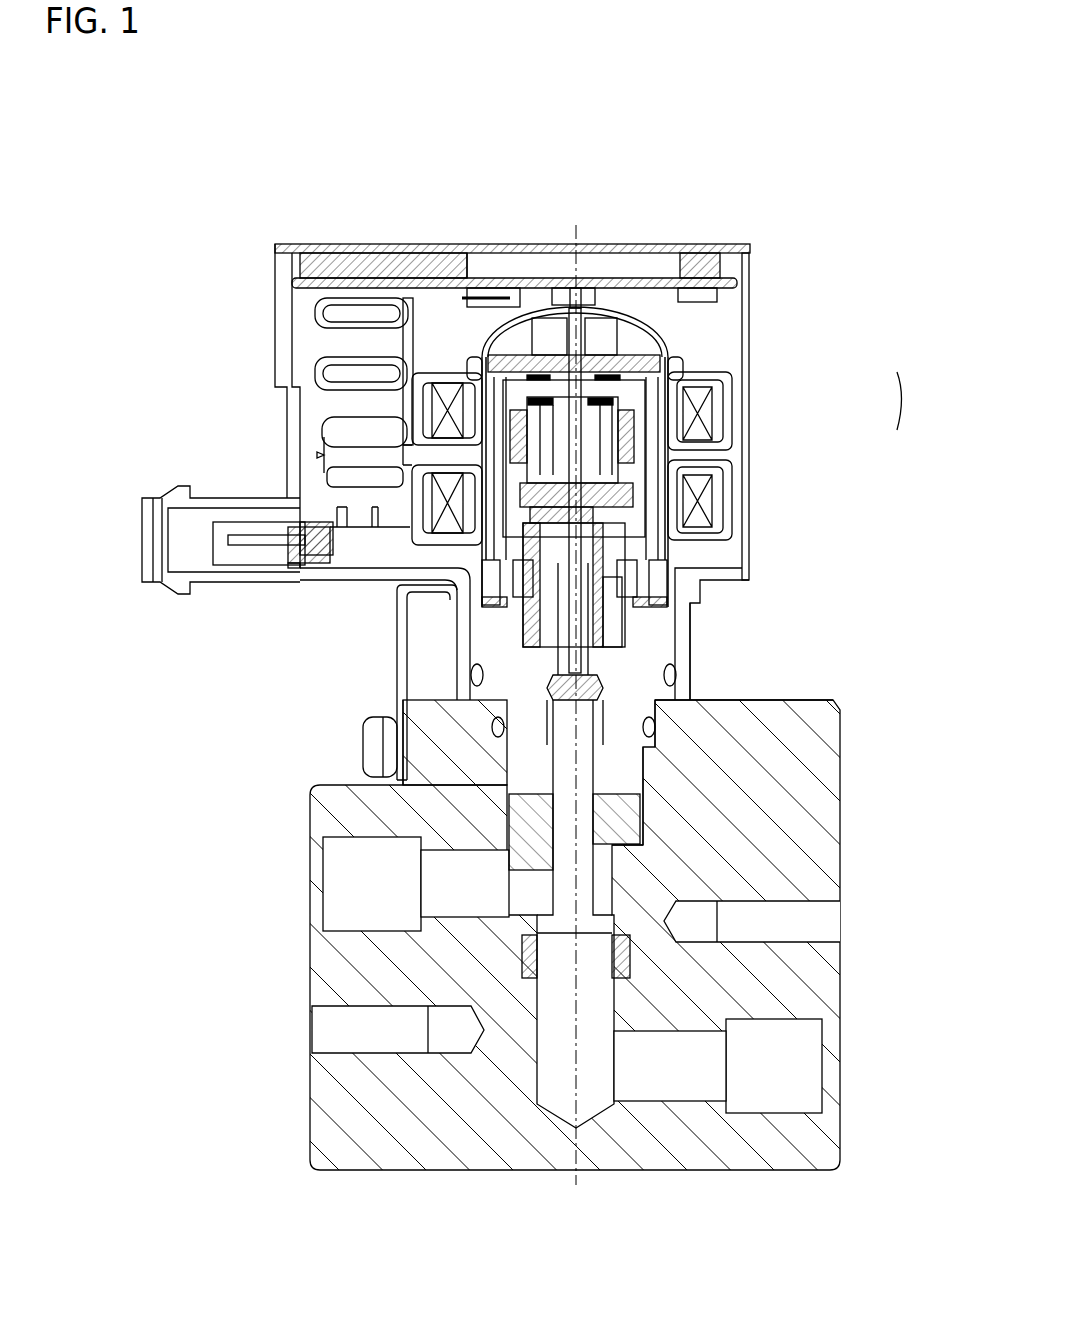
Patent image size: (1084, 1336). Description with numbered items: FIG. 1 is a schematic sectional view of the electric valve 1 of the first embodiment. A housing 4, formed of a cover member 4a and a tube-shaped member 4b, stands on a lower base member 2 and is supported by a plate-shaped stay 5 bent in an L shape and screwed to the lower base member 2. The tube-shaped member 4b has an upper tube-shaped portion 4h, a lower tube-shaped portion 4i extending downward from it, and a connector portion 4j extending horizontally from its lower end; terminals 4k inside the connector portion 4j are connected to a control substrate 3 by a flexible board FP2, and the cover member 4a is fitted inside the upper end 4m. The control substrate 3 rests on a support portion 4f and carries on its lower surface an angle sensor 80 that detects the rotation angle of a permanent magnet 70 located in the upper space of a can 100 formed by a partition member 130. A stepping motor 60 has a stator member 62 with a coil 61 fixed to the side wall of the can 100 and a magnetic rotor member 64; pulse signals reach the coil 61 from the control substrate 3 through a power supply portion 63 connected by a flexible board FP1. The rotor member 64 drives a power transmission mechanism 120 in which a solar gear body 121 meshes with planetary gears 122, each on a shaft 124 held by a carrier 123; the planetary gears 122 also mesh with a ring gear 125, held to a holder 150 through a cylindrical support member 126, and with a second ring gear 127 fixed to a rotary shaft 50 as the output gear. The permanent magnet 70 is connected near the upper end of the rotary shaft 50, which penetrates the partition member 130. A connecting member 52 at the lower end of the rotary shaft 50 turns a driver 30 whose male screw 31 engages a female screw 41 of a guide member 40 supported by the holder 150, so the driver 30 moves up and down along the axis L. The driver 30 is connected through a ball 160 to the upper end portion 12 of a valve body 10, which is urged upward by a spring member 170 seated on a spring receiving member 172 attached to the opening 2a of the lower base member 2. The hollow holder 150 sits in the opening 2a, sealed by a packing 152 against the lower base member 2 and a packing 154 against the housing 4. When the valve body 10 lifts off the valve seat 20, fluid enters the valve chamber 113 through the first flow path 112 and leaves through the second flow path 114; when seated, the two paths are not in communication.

The electric valve 1 is at (885, 285).
The lower base member 2 is at (850, 1165).
The opening 2a is at (790, 700).
The control substrate 3 is at (660, 285).
The housing 4 is at (750, 244).
The cover member 4a is at (275, 247).
The tube-shaped member 4b is at (300, 582).
The support portion 4f is at (463, 270).
The upper tube-shaped portion 4h is at (275, 330).
The lower tube-shaped portion 4i is at (693, 650).
The connector portion 4j is at (172, 490).
The terminals 4k is at (265, 546).
The upper end 4m is at (300, 262).
The stay 5 is at (400, 700).
The valve body 10 is at (650, 850).
The upper end portion 12 is at (700, 700).
The valve seat 20 is at (632, 960).
The driver 30 is at (450, 720).
The male screw 31 is at (470, 725).
The guide member 40 is at (628, 622).
The female screw 41 is at (410, 681).
The rotary shaft 50 is at (667, 345).
The connecting member 52 is at (720, 572).
The stepping motor 60 is at (919, 401).
The coil 61 is at (712, 437).
The stator member 62 is at (735, 378).
The power supply portion 63 is at (330, 486).
The rotor member 64 is at (722, 415).
The permanent magnet 70 is at (660, 318).
The angle sensor 80 is at (600, 282).
The can 100 is at (555, 300).
The first flow path 112 is at (665, 1100).
The valve chamber 113 is at (420, 1025).
The second flow path 114 is at (330, 880).
The power transmission mechanism 120 is at (740, 560).
The solar gear body 121 is at (740, 455).
The planetary gears 122 is at (748, 352).
The carrier 123 is at (740, 500).
The shaft 124 is at (690, 360).
The ring gear 125 is at (400, 412).
The cylindrical support member 126 is at (322, 572).
The second ring gear 127 is at (720, 535).
The partition member 130 is at (572, 305).
The holder 150 is at (528, 620).
The packing 152 is at (556, 710).
The packing 154 is at (550, 690).
The ball 160 is at (678, 678).
The spring member 170 is at (650, 720).
The spring receiving member 172 is at (640, 800).
The flexible board FP1 is at (350, 300).
The flexible board FP2 is at (440, 298).
The axis L is at (576, 691).